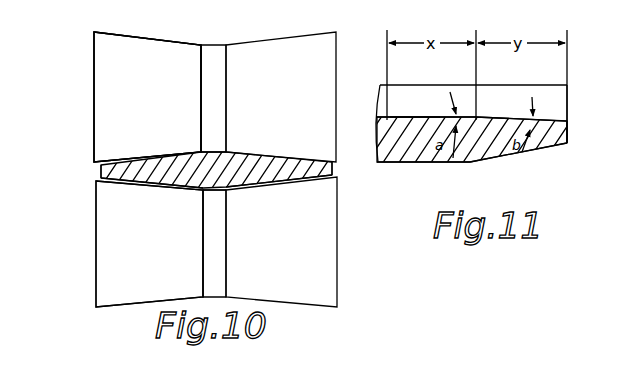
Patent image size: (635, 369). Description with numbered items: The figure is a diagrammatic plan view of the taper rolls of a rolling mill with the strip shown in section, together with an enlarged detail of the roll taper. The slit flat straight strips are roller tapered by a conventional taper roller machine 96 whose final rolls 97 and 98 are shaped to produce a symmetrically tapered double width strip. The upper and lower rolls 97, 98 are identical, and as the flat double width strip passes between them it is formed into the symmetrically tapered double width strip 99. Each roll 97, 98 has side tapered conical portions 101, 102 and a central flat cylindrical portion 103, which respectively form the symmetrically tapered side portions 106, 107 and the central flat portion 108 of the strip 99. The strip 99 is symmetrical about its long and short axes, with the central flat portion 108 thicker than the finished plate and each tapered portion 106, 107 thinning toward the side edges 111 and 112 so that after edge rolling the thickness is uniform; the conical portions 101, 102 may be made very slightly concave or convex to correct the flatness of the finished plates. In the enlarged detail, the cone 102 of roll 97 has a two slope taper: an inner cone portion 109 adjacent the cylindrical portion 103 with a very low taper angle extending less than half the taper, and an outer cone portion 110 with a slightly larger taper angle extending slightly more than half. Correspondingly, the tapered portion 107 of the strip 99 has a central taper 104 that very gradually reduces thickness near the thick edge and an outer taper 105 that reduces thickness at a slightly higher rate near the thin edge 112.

In FIG. 10, the taper roller machine 96 is at (92, 60).
In FIG. 10, the upper roll 97 is at (118, 108).
In FIG. 11, the upper roll 97 is at (557, 122).
In FIG. 10, the lower roll 98 is at (115, 232).
In FIG. 10, the symmetrically tapered double width strip 99 is at (101, 165).
In FIG. 11, the symmetrically tapered double width strip 99 is at (553, 133).
In FIG. 10, the side tapered conical portion 101 is at (133, 57).
In FIG. 10, the side tapered conical portion 102 is at (293, 67).
In FIG. 11, the side tapered conical portion 102 is at (497, 107).
In FIG. 10, the central flat cylindrical portion 103 is at (213, 58).
In FIG. 11, the central flat cylindrical portion 103 is at (381, 103).
In FIG. 11, the central taper 104 is at (443, 117).
In FIG. 11, the outer taper 105 is at (567, 88).
In FIG. 10, the symmetrically tapered side portion 106 is at (145, 188).
In FIG. 10, the symmetrically tapered side portion 107 is at (298, 184).
In FIG. 11, the symmetrically tapered side portion 107 is at (467, 162).
In FIG. 10, the central flat portion 108 is at (212, 190).
In FIG. 11, the central flat portion 108 is at (383, 163).
In FIG. 11, the inner cone portion 109 is at (403, 150).
In FIG. 11, the outer cone portion 110 is at (537, 150).
In FIG. 10, the side edge 111 is at (100, 174).
In FIG. 10, the side edge 112 is at (333, 168).
In FIG. 11, the side edge 112 is at (567, 143).